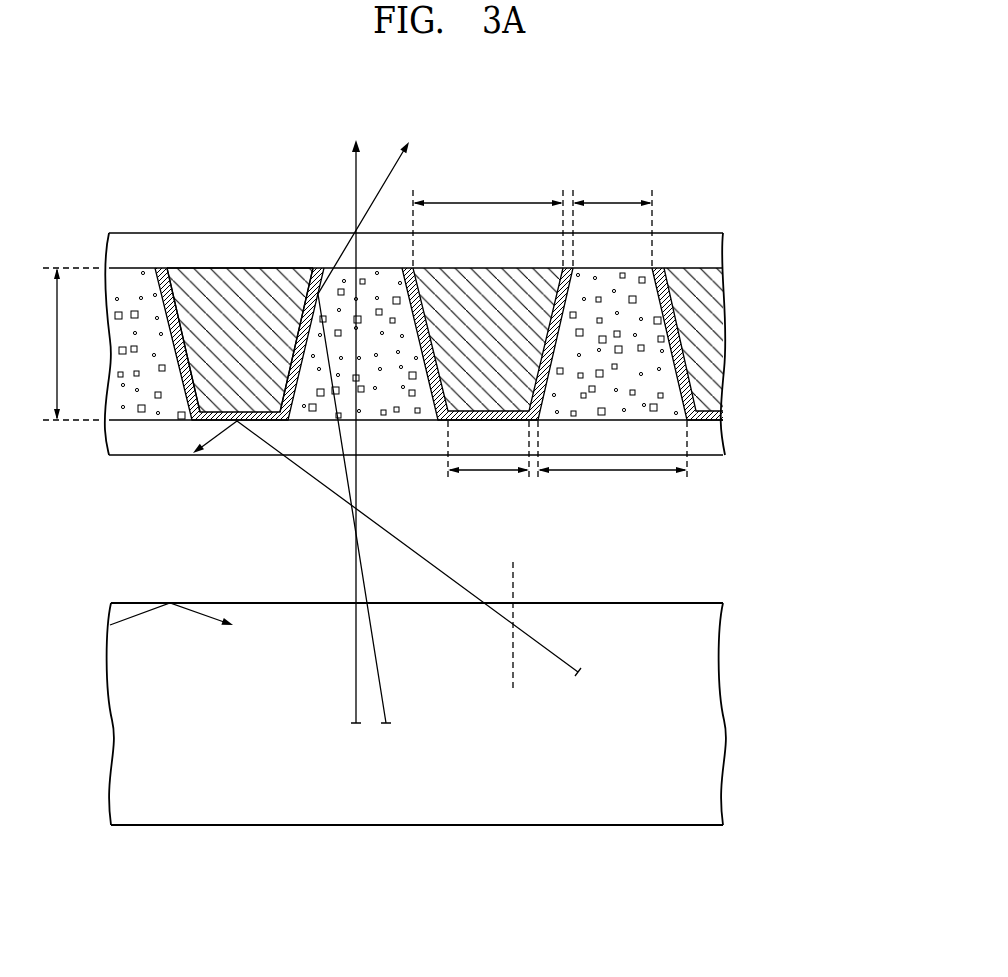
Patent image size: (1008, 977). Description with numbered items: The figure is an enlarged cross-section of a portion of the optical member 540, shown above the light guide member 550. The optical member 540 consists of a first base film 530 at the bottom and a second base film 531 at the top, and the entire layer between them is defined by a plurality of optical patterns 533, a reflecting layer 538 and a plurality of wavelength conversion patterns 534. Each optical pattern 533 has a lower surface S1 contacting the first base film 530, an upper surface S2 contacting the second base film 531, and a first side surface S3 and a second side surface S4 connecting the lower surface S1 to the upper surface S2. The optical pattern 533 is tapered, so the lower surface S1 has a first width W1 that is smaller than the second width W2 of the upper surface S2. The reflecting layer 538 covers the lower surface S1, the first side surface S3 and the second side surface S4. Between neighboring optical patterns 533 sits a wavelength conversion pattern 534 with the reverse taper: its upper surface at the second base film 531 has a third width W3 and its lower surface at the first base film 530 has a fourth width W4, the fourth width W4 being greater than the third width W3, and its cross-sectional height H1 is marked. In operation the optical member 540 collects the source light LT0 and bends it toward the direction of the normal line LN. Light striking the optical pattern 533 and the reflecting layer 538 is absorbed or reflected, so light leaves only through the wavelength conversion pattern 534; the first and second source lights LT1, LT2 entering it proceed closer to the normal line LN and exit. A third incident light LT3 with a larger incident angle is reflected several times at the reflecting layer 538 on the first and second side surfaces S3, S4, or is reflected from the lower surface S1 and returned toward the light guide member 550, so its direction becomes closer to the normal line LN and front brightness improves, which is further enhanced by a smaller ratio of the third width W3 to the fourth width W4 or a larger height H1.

The optical member 540 is at (805, 243).
The second base film 531 is at (717, 252).
The first base film 530 is at (717, 440).
The optical pattern 533 is at (717, 345).
The wavelength conversion pattern 534 is at (668, 312).
The reflecting layer 538 is at (717, 417).
The light guide member 550 is at (712, 712).
The lower surface S1 is at (210, 421).
The upper surface S2 is at (238, 267).
The first side surface S3 is at (178, 303).
The second side surface S4 is at (302, 293).
The cross-sectional height H1 is at (71, 344).
The first width W1 is at (488, 460).
The second width W2 is at (488, 224).
The third width W3 is at (612, 224).
The fourth width W4 is at (612, 460).
The source light LT0 is at (200, 617).
The first source light LT1 is at (357, 712).
The second source light LT2 is at (388, 707).
The third incident light LT3 is at (547, 655).
The normal line LN is at (513, 578).